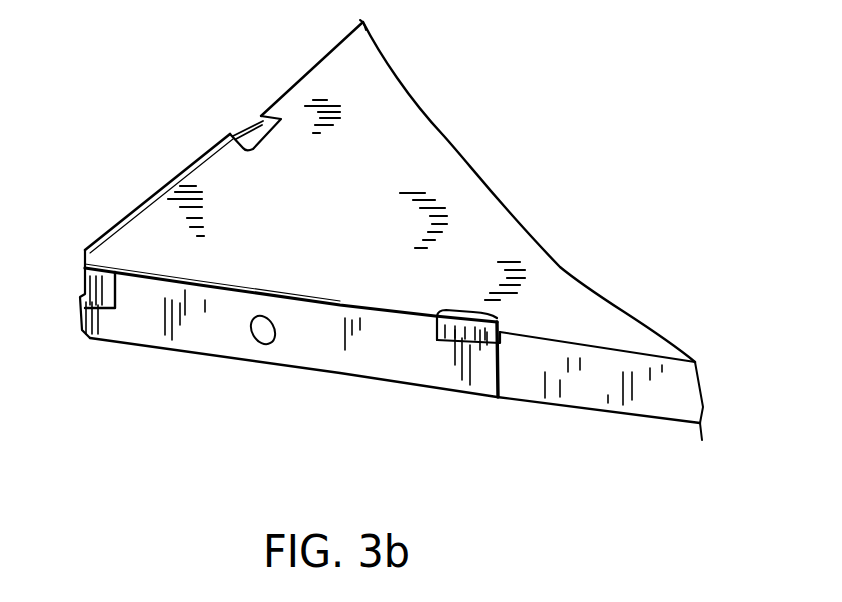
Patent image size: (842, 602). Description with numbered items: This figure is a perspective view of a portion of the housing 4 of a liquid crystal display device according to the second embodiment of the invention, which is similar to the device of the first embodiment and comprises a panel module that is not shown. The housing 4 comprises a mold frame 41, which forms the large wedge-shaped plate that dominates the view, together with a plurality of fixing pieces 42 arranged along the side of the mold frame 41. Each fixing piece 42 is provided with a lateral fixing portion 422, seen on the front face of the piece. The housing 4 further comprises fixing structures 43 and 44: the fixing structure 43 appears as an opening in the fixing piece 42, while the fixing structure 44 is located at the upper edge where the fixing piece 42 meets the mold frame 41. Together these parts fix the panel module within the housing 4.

The housing 4 is at (391, 260).
The mold frame 41 is at (431, 150).
The fixing piece 42 is at (387, 368).
The lateral fixing portion 422 is at (310, 360).
The fixing structure 43 is at (258, 338).
The fixing structure 44 is at (507, 318).